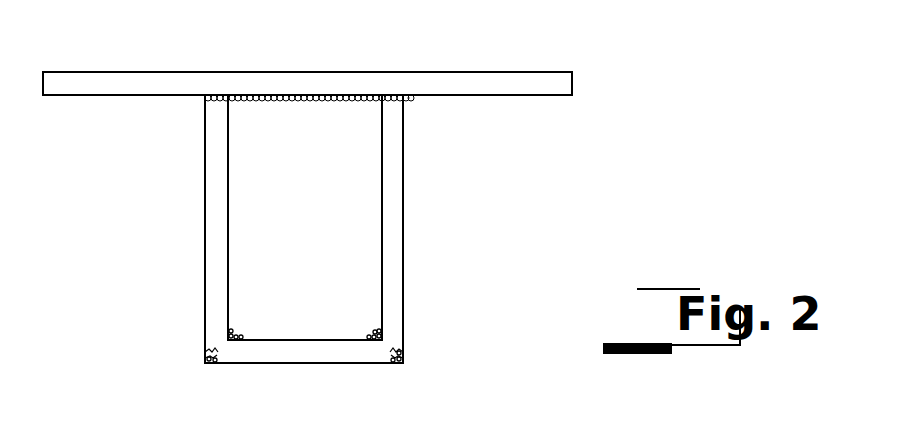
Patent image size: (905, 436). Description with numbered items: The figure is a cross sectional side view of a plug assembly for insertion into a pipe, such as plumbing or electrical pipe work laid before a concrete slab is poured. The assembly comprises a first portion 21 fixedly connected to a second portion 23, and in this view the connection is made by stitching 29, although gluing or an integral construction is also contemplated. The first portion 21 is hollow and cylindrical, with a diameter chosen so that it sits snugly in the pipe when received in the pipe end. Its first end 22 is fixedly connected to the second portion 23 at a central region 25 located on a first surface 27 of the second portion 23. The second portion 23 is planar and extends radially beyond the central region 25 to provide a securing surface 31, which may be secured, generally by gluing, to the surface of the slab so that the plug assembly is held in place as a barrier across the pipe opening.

The first portion 21 is at (395, 262).
The first end 22 is at (395, 105).
The second portion 23 is at (572, 72).
The central region 25 is at (303, 95).
The first surface 27 is at (158, 96).
The stitching 29 is at (370, 95).
The securing surface 31 is at (102, 96).